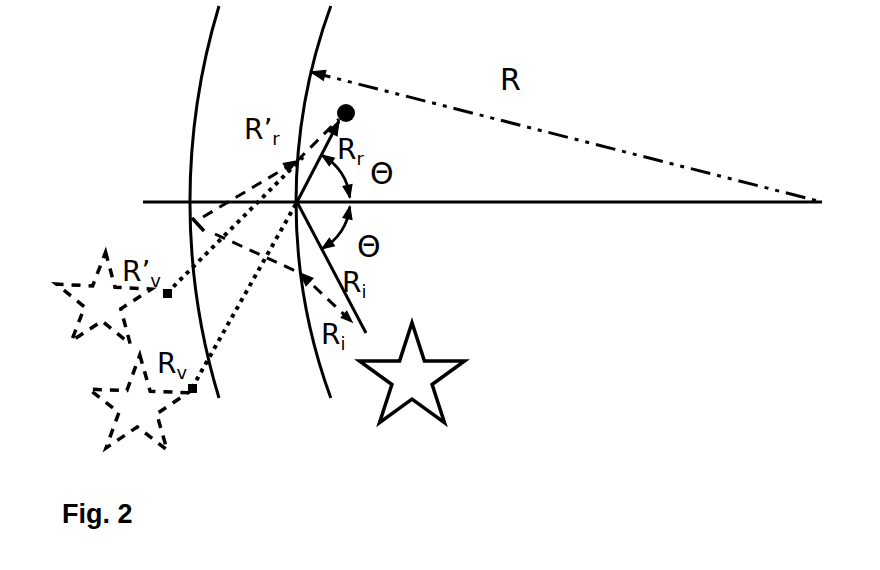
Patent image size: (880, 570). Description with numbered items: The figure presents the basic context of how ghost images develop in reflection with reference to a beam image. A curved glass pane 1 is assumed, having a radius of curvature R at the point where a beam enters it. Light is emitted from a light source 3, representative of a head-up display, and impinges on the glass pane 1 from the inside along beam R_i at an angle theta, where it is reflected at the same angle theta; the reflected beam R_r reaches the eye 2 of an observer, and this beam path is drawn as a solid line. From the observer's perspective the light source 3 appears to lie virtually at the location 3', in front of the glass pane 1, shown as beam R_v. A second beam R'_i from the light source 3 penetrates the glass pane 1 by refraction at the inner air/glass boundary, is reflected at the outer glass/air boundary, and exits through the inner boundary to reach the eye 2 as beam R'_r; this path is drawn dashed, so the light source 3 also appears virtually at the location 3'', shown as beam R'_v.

The curved glass pane 1 is at (182, 106).
The eye 2 is at (356, 116).
The light source 3 is at (411, 373).
The virtual location of light source 3' is at (130, 402).
The virtual location of light source (ghost image) 3'' is at (94, 298).